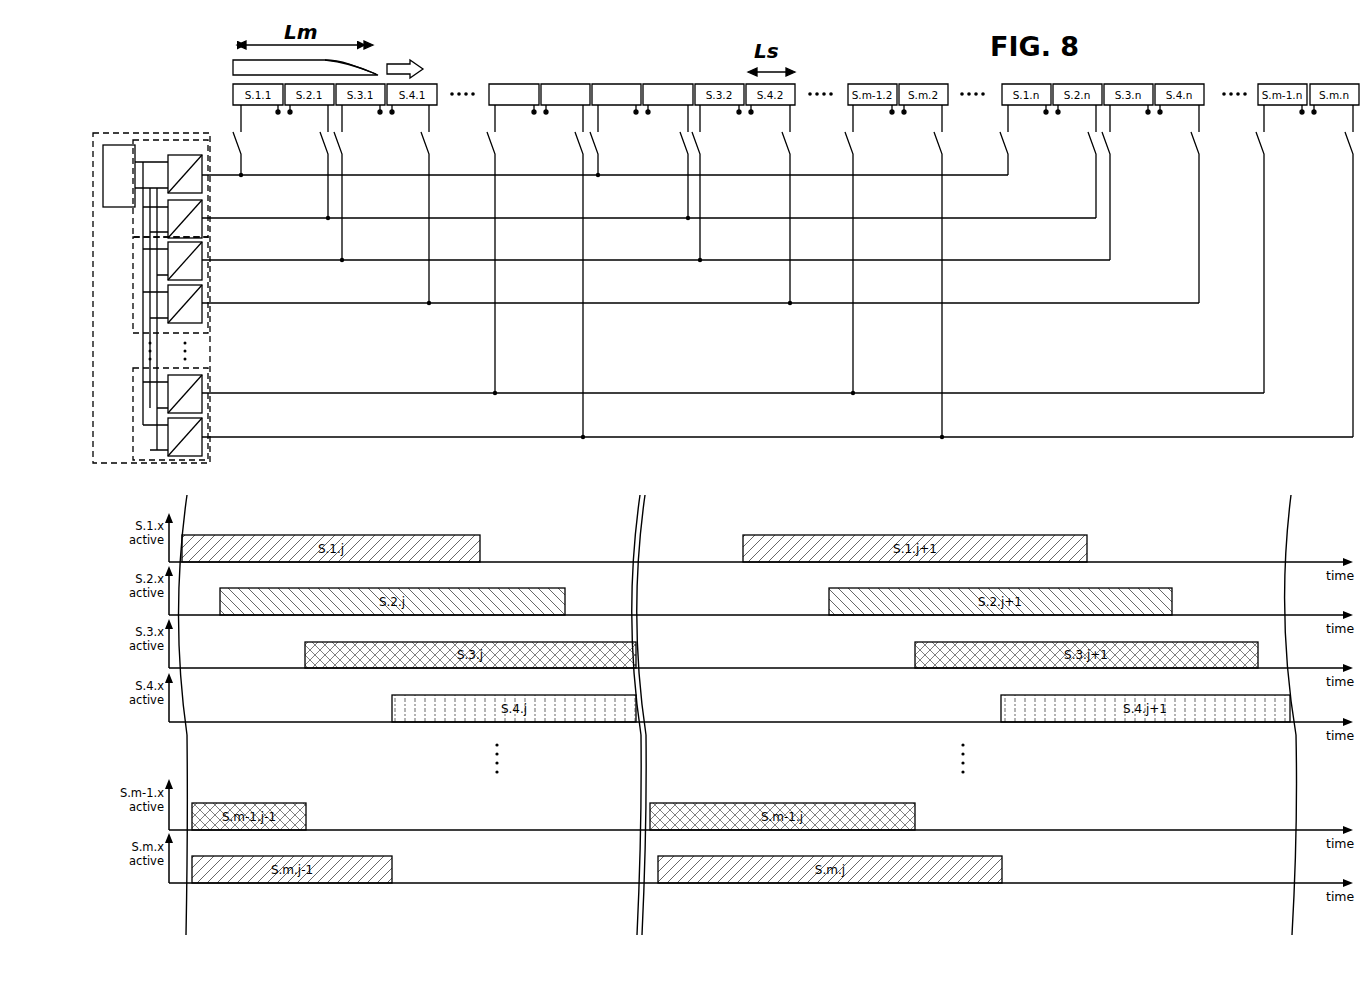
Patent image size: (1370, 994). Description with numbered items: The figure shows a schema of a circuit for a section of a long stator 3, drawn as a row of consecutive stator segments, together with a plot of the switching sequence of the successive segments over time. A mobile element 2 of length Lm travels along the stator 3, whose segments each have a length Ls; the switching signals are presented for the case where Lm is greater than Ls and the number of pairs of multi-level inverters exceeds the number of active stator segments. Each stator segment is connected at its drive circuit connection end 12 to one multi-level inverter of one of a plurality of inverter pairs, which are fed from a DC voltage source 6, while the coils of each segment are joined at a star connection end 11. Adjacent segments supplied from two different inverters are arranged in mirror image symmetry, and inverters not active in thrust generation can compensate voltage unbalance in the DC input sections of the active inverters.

The mobile element 2 is at (229, 68).
The stator 3 is at (668, 80).
The DC voltage source 6 is at (121, 139).
The star connection end 11 is at (795, 124).
The drive circuit connection end 12 is at (784, 272).